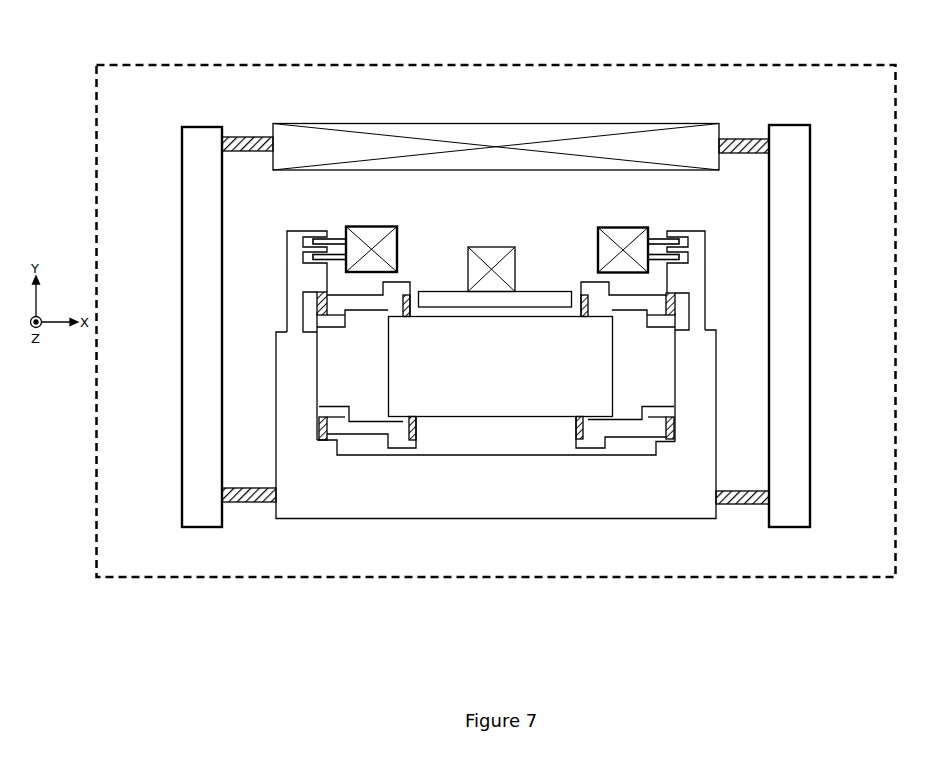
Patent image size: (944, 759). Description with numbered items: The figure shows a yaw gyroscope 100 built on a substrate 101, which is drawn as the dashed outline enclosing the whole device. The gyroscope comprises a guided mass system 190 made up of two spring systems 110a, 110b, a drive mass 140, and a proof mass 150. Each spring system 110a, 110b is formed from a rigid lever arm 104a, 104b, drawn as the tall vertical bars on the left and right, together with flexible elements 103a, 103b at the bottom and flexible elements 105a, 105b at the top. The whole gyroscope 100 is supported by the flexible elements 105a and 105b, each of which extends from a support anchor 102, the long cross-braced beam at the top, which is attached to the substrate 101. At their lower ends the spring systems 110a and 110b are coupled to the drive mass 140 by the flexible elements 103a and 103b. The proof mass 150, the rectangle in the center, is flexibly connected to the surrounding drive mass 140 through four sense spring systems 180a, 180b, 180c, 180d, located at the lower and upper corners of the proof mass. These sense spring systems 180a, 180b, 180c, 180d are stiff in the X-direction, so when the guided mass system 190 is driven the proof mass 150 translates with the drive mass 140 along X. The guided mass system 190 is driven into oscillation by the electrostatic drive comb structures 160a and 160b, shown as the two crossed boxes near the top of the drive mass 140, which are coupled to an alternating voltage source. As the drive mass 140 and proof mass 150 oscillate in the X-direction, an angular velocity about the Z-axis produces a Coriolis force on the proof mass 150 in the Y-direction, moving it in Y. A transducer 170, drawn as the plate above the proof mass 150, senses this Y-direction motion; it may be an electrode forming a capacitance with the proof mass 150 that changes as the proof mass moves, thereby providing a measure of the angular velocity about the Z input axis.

The yaw gyroscope 100 is at (510, 622).
The substrate 101 is at (342, 63).
The support anchor 102 is at (498, 123).
The flexible element 103a is at (238, 502).
The flexible element 103b is at (742, 505).
The rigid lever arm 104a is at (182, 315).
The rigid lever arm 104b is at (814, 318).
The flexible element 105a is at (253, 138).
The flexible element 105b is at (740, 138).
The spring system 110a is at (167, 232).
The spring system 110b is at (820, 238).
The drive mass 140 is at (484, 512).
The proof mass 150 is at (610, 377).
The electrostatic drive comb structure 160a is at (377, 230).
The electrostatic drive comb structure 160b is at (627, 213).
The transducer 170 is at (522, 297).
The sense spring system 180a is at (412, 444).
The sense spring system 180b is at (577, 448).
The sense spring system 180c is at (362, 308).
The sense spring system 180d is at (637, 312).
The guided mass system 190 is at (491, 244).